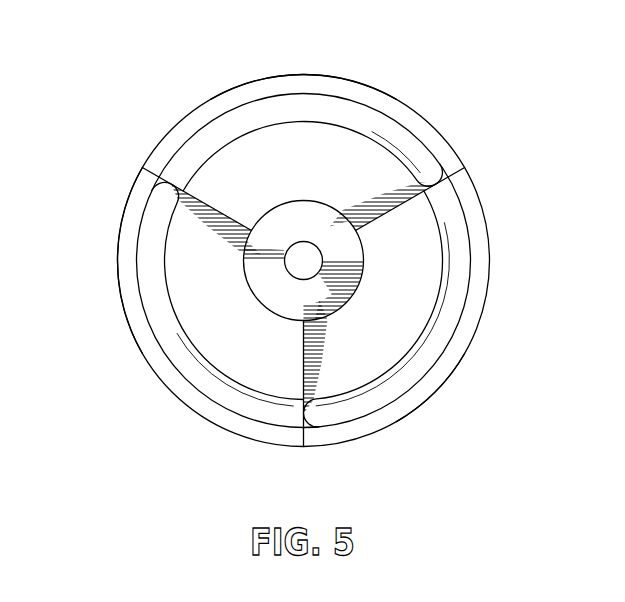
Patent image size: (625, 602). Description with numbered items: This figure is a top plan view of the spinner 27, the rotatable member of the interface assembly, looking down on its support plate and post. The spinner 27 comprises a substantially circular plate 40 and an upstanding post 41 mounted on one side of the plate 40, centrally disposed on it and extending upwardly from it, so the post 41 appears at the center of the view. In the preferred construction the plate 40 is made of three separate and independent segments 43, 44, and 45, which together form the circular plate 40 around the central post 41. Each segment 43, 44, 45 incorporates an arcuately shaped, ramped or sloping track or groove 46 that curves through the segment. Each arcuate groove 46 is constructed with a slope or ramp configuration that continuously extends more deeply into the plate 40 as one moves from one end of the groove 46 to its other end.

The spinner 27 is at (177, 409).
The circular plate 40 is at (413, 101).
The upstanding post 41 is at (288, 214).
The segment 43 is at (430, 398).
The segment 44 is at (304, 73).
The segment 45 is at (120, 281).
The arcuate groove 46 is at (203, 142).